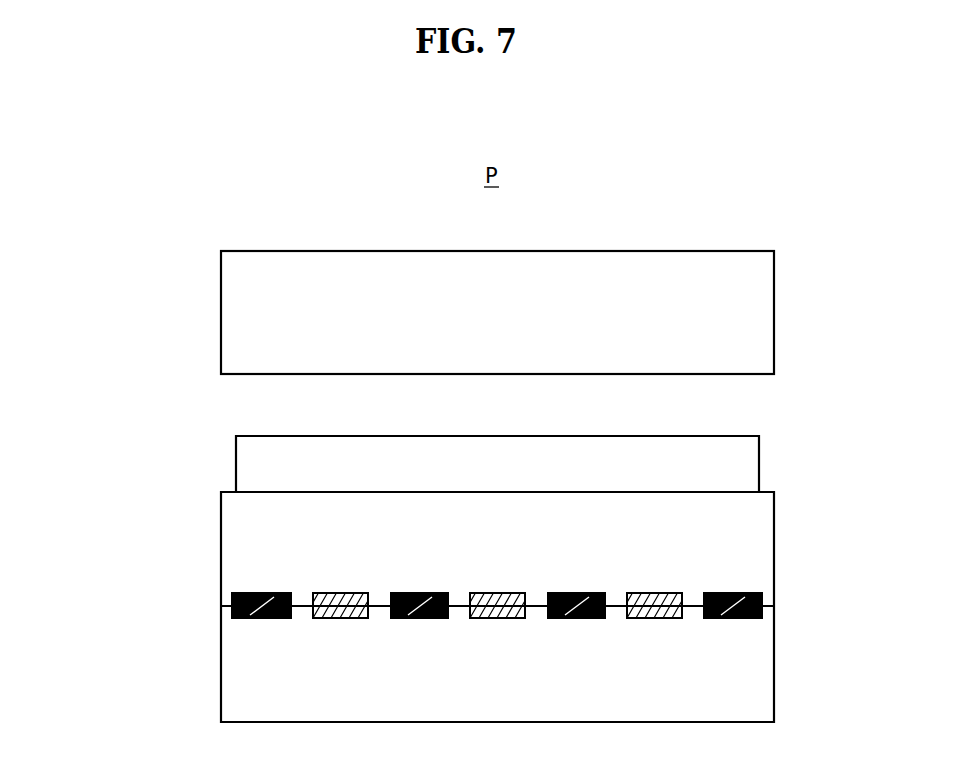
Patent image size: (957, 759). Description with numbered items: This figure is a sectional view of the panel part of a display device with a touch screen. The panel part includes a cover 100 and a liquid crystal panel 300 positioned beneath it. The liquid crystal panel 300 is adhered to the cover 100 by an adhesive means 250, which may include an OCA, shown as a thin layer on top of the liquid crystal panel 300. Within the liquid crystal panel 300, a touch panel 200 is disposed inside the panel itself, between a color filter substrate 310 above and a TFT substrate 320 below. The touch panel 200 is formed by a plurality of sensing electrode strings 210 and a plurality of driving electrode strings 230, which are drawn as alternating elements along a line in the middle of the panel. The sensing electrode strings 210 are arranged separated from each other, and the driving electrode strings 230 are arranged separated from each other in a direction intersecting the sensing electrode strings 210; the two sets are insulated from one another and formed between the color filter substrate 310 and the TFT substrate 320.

The cover 100 is at (242, 311).
The adhesive means 250 is at (257, 467).
The liquid crystal panel 300 is at (470, 607).
The color filter substrate 310 is at (242, 550).
The TFT substrate 320 is at (242, 668).
The touch panel 200 is at (413, 609).
The driving electrode strings 230 is at (252, 593).
The sensing electrode strings 210 is at (338, 617).